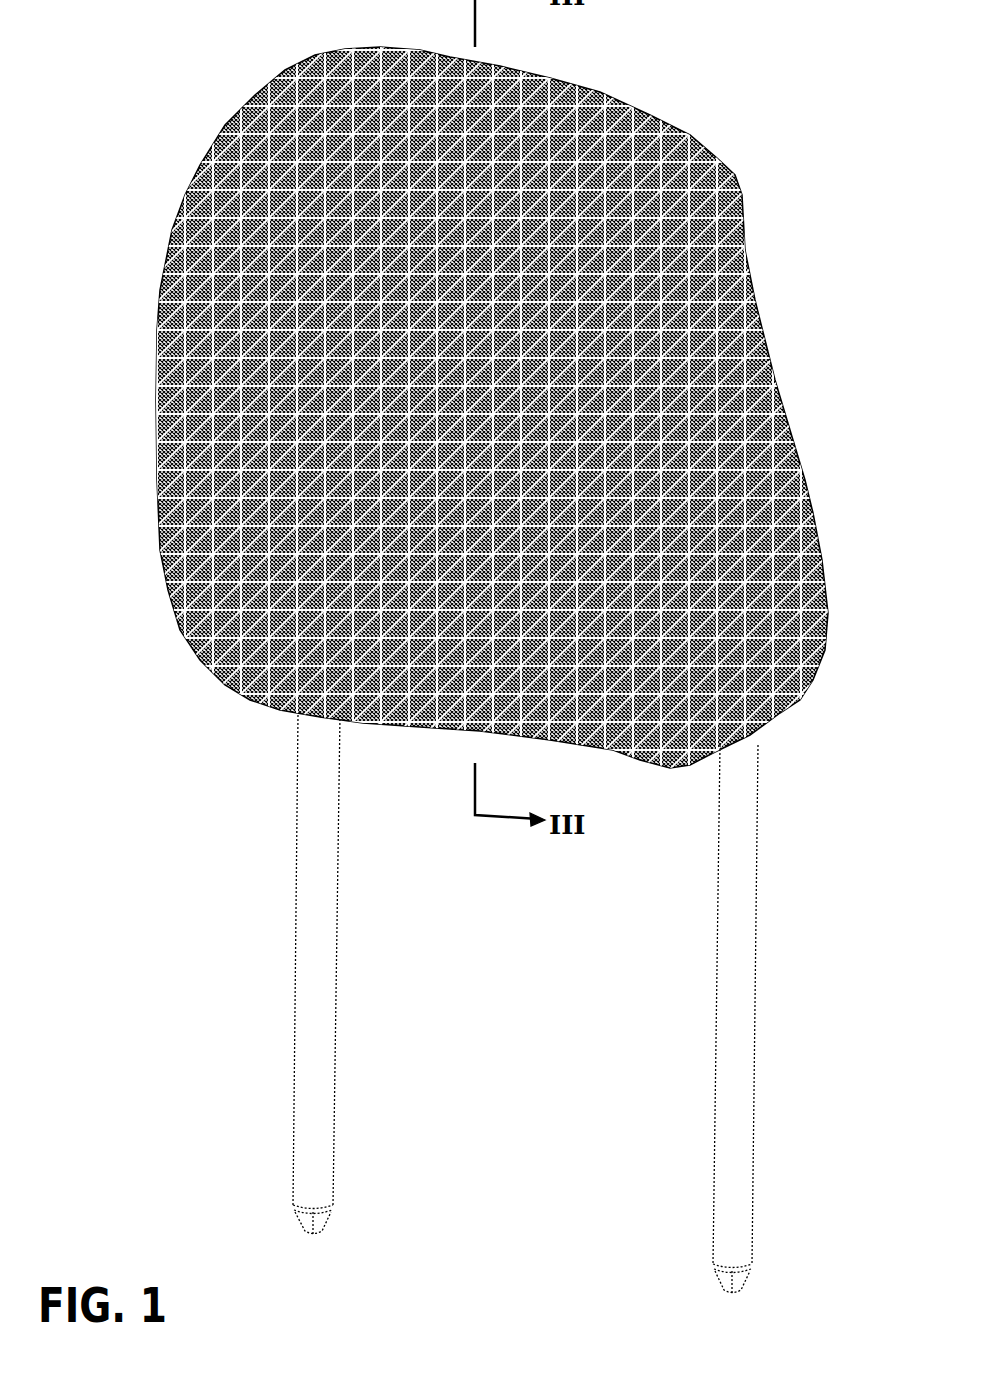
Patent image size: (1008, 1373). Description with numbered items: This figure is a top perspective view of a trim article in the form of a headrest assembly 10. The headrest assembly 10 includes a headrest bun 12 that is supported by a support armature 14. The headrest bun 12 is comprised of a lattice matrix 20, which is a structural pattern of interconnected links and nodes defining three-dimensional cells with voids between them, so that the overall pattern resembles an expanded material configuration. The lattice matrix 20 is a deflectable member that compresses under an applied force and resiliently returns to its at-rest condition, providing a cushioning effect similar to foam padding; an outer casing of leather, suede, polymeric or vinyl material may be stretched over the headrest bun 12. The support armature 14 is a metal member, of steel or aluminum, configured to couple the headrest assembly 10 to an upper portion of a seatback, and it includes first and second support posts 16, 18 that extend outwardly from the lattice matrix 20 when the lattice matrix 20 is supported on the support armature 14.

The headrest assembly 10 is at (495, 648).
The headrest bun 12 is at (140, 273).
The support armature 14 is at (447, 1004).
The first support post 16 is at (313, 1017).
The second support post 18 is at (732, 1016).
The lattice matrix 20 is at (818, 358).